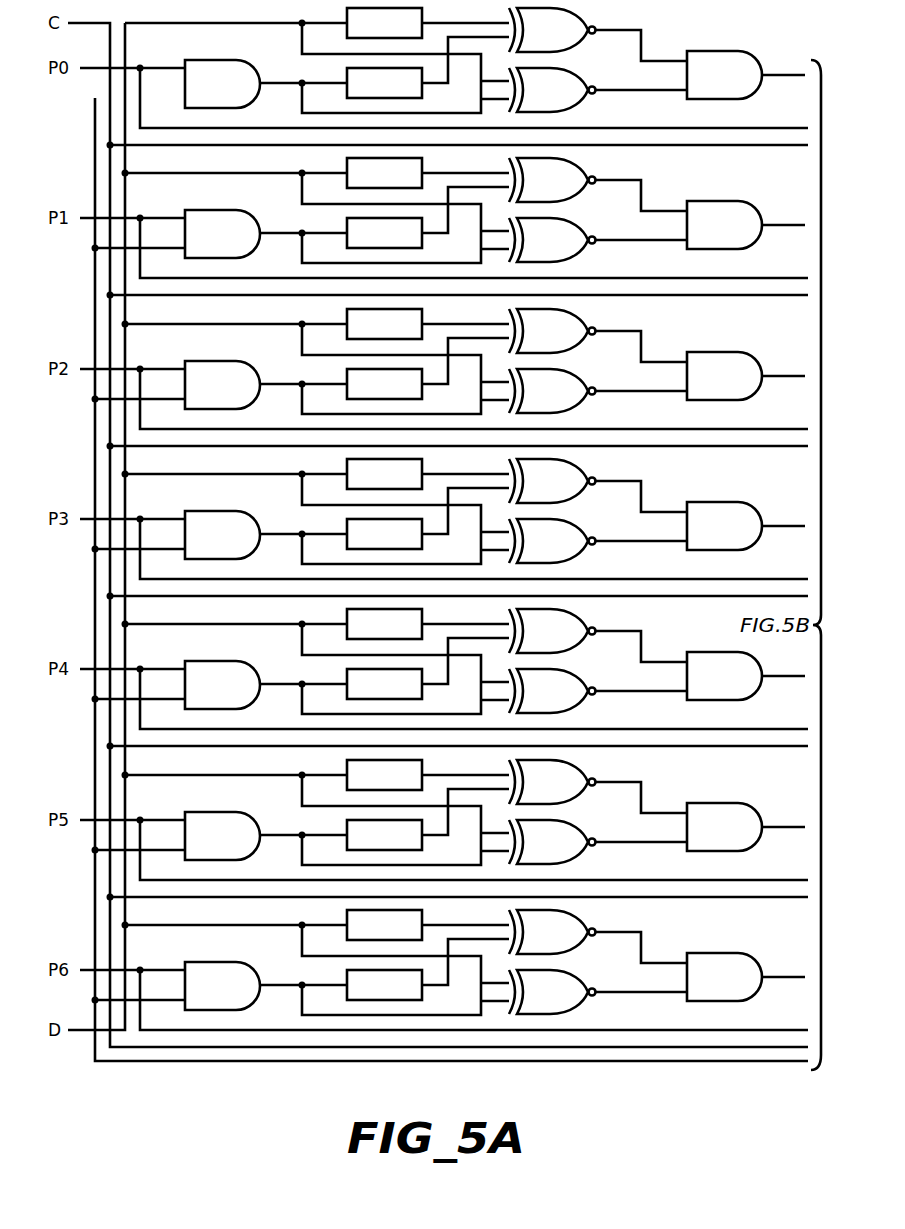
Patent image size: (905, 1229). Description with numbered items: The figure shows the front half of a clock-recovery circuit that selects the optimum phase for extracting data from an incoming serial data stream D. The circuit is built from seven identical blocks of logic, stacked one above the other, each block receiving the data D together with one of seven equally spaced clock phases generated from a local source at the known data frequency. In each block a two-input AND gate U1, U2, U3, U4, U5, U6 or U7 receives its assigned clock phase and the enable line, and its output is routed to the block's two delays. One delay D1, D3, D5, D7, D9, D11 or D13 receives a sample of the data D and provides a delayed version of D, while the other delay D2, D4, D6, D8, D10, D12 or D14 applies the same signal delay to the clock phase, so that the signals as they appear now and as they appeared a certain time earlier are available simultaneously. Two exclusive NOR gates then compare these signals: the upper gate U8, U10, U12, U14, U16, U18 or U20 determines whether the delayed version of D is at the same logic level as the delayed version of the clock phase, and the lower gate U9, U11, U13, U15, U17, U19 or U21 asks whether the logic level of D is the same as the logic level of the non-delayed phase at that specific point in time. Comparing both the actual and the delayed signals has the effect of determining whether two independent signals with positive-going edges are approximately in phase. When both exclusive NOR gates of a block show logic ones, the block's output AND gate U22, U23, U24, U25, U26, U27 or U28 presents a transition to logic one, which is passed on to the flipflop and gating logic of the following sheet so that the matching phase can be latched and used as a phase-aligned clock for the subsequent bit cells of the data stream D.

The AND gate U1 is at (222, 84).
The AND gate U2 is at (222, 234).
The AND gate U3 is at (222, 385).
The AND gate U4 is at (222, 535).
The AND gate U5 is at (222, 685).
The AND gate U6 is at (222, 836).
The AND gate U7 is at (222, 986).
The delay D1 is at (384, 23).
The delay D2 is at (384, 83).
The delay D3 is at (384, 173).
The delay D4 is at (384, 233).
The delay D5 is at (384, 324).
The delay D6 is at (384, 384).
The delay D7 is at (384, 474).
The delay D8 is at (384, 534).
The delay D9 is at (384, 624).
The delay D10 is at (384, 684).
The delay D11 is at (384, 775).
The delay D12 is at (384, 835).
The delay D13 is at (384, 925).
The delay D14 is at (384, 985).
The exclusive NOR gate U8 is at (552, 30).
The exclusive NOR gate U9 is at (552, 90).
The exclusive NOR gate U10 is at (552, 180).
The exclusive NOR gate U11 is at (552, 240).
The exclusive NOR gate U12 is at (552, 331).
The exclusive NOR gate U13 is at (552, 391).
The exclusive NOR gate U14 is at (552, 481).
The exclusive NOR gate U15 is at (552, 541).
The exclusive NOR gate U16 is at (552, 631).
The exclusive NOR gate U17 is at (552, 691).
The exclusive NOR gate U18 is at (552, 782).
The exclusive NOR gate U19 is at (552, 842).
The exclusive NOR gate U20 is at (552, 932).
The exclusive NOR gate U21 is at (552, 992).
The AND gate U22 is at (724, 75).
The AND gate U23 is at (724, 225).
The AND gate U24 is at (724, 376).
The AND gate U25 is at (724, 526).
The AND gate U26 is at (724, 676).
The AND gate U27 is at (724, 827).
The AND gate U28 is at (724, 977).